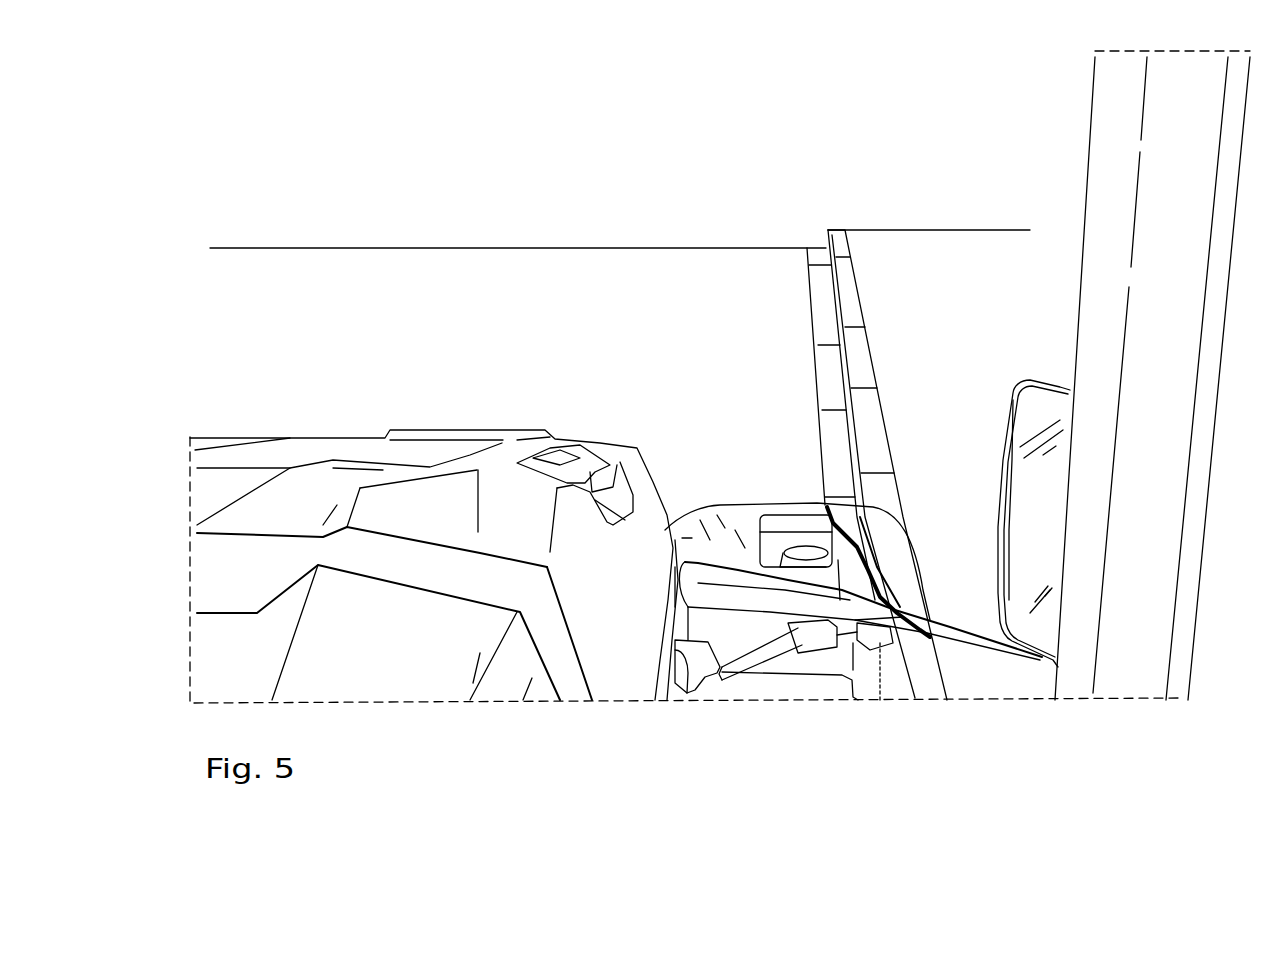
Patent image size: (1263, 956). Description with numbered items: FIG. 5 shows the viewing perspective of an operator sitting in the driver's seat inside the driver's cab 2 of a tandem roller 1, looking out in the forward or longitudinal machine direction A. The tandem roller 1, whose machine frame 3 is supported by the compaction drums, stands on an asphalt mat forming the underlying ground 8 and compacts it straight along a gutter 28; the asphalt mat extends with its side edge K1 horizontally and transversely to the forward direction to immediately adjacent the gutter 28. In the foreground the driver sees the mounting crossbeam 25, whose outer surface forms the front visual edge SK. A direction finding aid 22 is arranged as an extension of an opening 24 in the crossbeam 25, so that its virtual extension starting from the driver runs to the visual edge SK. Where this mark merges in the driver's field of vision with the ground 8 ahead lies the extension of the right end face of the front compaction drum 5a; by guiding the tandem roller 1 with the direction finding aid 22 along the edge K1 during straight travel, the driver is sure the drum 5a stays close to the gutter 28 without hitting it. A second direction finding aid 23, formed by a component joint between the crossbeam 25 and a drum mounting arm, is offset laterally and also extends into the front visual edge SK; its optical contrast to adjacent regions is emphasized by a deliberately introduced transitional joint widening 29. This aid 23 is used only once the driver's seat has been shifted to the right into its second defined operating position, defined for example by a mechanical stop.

The tandem roller 1 is at (720, 451).
The driver's cab 2 is at (1152, 431).
The machine frame 3 is at (395, 565).
The front compaction drum 5a is at (801, 719).
The ground 8 is at (620, 166).
The direction finding aid 22 is at (858, 493).
The direction finding aid 23 is at (911, 521).
The opening 24 is at (759, 668).
The mounting crossbeam 25 is at (797, 429).
The gutter 28 is at (878, 415).
The transitional joint widening 29 is at (943, 638).
The side edge K1 is at (828, 309).
The front visual edge SK is at (794, 493).
The longitudinal machine direction A is at (520, 320).